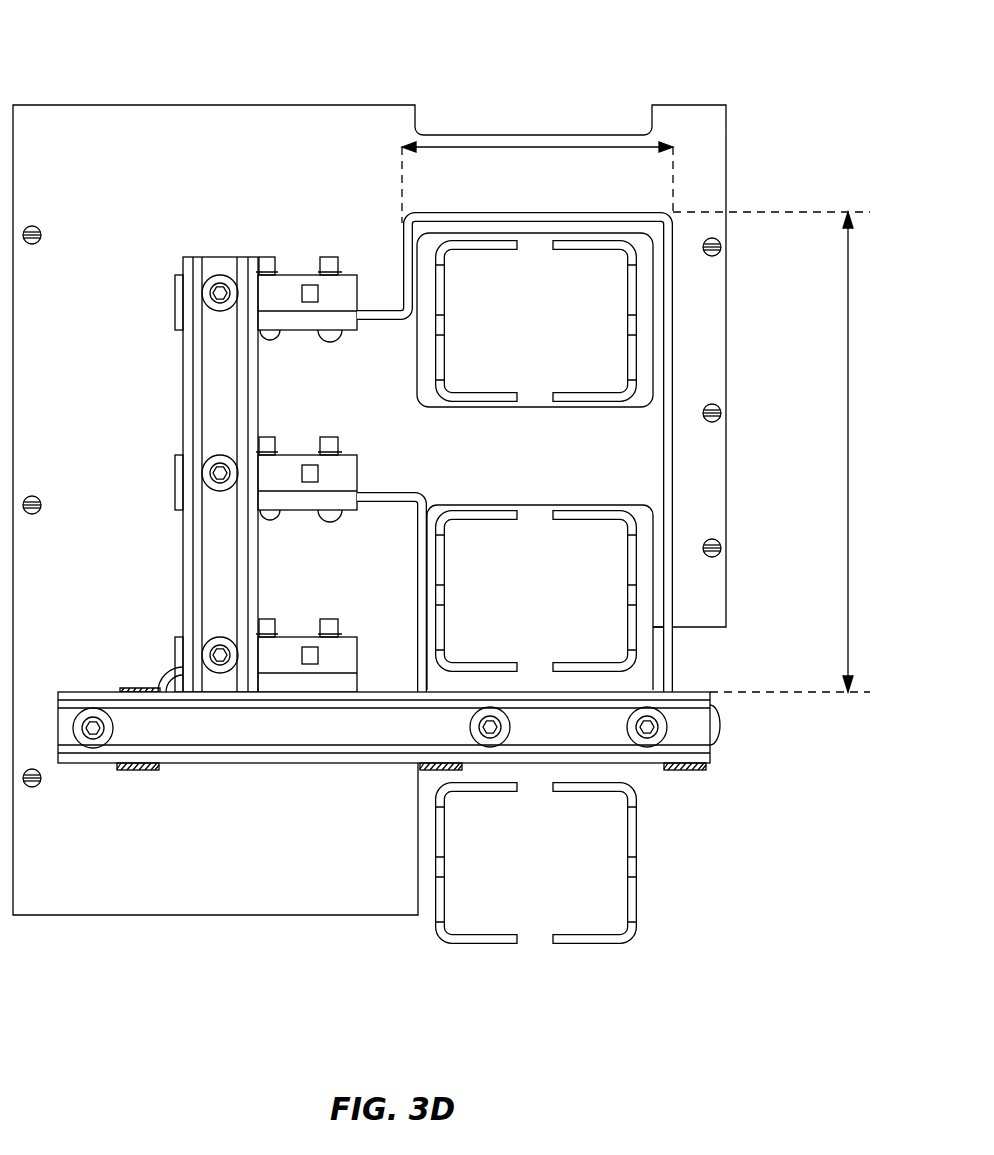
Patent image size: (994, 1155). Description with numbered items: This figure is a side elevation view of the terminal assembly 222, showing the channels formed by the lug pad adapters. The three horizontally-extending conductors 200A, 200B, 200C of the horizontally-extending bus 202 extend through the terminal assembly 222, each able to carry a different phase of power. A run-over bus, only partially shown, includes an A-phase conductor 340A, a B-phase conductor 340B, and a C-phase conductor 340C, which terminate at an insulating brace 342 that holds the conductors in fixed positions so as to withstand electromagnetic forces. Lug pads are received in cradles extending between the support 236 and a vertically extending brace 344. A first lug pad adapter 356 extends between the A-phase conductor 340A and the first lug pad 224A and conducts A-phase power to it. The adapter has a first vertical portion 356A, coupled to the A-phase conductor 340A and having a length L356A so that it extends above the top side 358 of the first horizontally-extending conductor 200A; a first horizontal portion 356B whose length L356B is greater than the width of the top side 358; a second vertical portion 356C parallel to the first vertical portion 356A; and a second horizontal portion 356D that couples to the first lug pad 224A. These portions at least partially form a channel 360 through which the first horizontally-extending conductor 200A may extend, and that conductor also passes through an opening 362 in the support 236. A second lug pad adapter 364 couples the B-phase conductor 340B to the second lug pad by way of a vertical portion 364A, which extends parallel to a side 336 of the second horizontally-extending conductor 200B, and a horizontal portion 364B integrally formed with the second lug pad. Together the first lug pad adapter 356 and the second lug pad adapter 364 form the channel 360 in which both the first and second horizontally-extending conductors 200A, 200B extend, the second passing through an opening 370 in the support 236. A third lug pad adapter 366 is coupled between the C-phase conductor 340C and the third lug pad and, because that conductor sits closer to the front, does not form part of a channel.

The terminal assembly 222 is at (668, 75).
The support 236 is at (172, 105).
The length of first horizontal portion L356B is at (450, 145).
The length of first vertical portion L356A is at (846, 530).
The brace 344 is at (184, 365).
The third lug pad adapter 366 is at (160, 663).
The first lug pad 224A is at (370, 275).
The first lug pad adapter 356 is at (554, 424).
The first vertical portion 356A is at (675, 394).
The first horizontal portion 356B is at (442, 212).
The second vertical portion 356C is at (403, 243).
The second horizontal portion 356D is at (385, 322).
The channel 360 is at (650, 222).
The second lug pad adapter 364 is at (395, 573).
The vertical portion 364A is at (417, 585).
The horizontal portion 364B is at (383, 492).
The first horizontally-extending conductor 200A is at (608, 316).
The second horizontally-extending conductor 200B is at (562, 567).
The third horizontally-extending conductor 200C is at (500, 948).
The horizontally-extending bus 202 is at (592, 972).
The top side 358 is at (600, 240).
The opening 362 is at (653, 352).
The opening 370 is at (658, 607).
The side 336 is at (437, 555).
The brace 342 is at (272, 765).
The A-phase conductor 340A is at (700, 768).
The B-phase conductor 340B is at (437, 765).
The C-phase conductor 340C is at (145, 765).